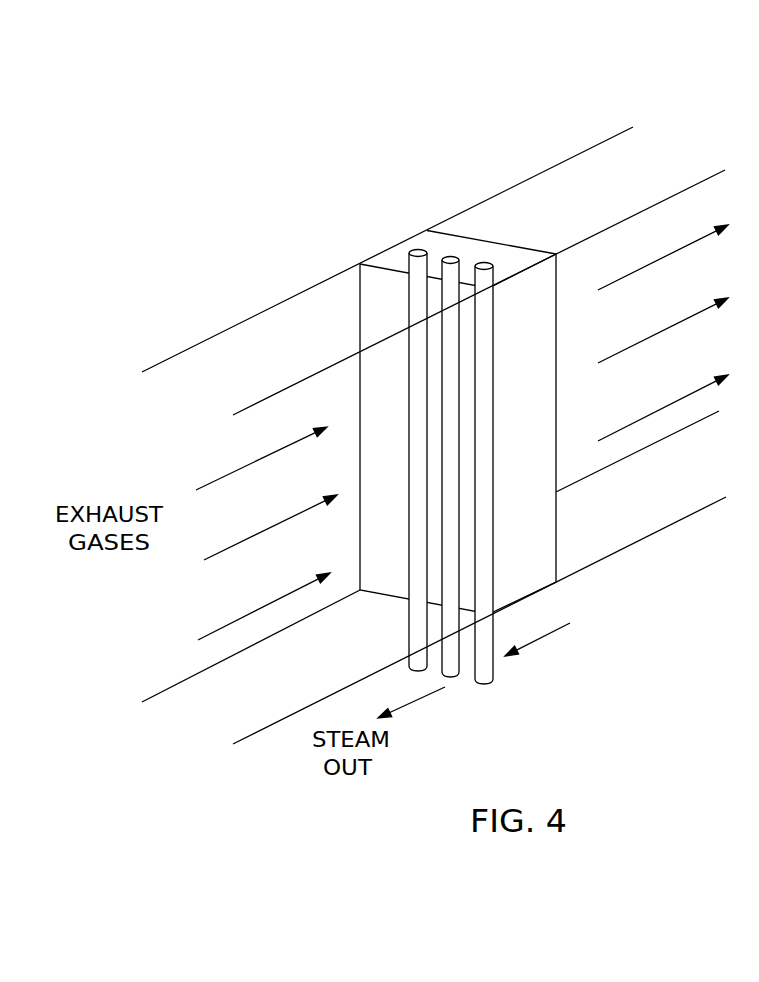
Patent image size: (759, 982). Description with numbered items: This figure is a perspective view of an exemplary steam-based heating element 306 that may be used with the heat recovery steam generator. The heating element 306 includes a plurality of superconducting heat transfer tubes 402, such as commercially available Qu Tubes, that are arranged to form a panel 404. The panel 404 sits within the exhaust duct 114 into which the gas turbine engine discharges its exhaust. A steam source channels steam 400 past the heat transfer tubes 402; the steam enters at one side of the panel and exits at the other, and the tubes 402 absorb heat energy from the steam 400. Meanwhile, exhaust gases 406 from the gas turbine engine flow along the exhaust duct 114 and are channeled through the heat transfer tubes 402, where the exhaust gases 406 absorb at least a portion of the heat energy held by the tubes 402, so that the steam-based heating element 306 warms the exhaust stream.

The steam-based heating element 306 is at (569, 86).
The superconducting heat transfer tubes 402 is at (484, 265).
The panel 404 is at (510, 258).
The exhaust gases 406 is at (222, 477).
The steam 400 is at (558, 628).
The exhaust duct 114 is at (182, 730).